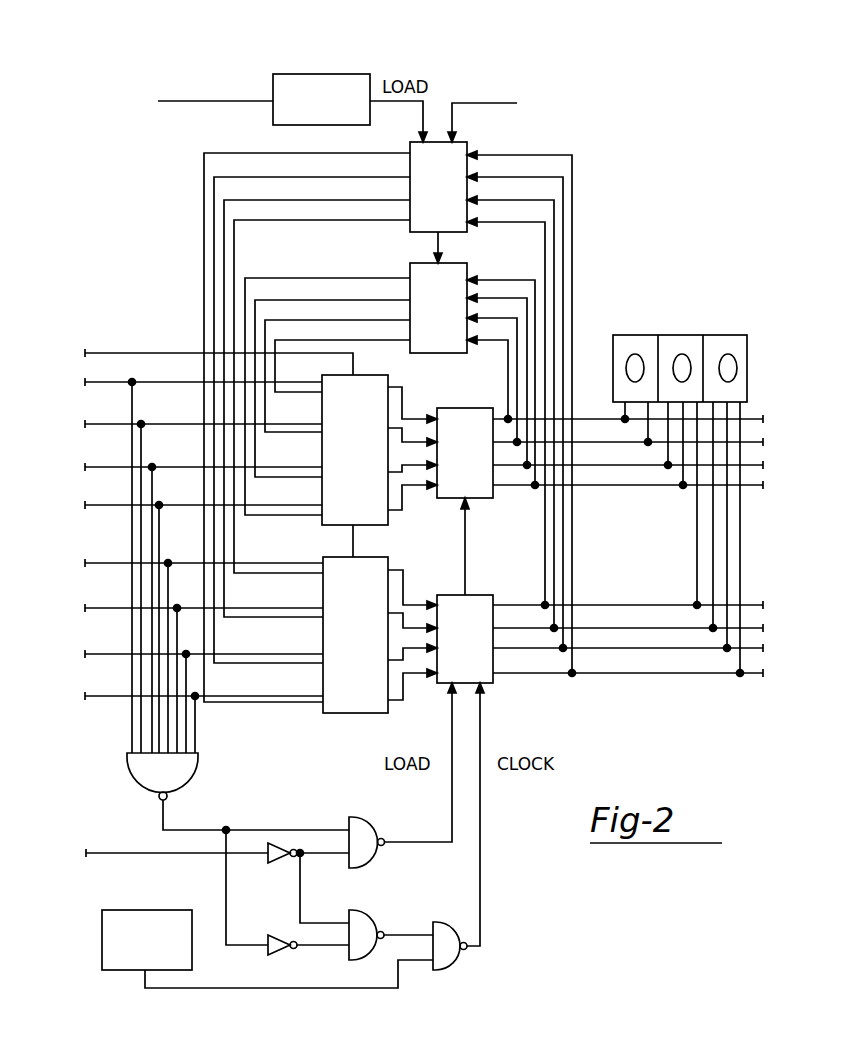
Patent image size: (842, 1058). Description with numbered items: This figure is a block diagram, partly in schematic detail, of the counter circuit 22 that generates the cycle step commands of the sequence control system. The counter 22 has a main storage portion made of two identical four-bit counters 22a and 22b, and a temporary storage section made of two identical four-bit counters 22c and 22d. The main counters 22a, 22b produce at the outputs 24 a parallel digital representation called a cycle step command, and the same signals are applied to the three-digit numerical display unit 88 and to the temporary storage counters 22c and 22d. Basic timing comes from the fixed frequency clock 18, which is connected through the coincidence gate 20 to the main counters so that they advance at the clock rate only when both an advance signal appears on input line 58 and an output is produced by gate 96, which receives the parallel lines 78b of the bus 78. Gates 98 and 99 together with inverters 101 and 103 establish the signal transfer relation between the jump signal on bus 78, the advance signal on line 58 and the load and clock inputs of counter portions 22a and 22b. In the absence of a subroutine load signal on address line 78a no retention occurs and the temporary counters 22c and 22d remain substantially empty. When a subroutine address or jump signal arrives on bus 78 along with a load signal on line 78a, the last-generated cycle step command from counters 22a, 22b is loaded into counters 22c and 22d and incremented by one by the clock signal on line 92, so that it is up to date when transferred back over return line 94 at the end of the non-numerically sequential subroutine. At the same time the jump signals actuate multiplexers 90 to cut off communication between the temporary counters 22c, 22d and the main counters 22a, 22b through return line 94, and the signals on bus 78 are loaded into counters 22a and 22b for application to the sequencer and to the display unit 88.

The address line 78a is at (232, 88).
The clock line 92 is at (517, 103).
The four-bit counter 22d is at (470, 147).
The four-bit counter 22c is at (410, 268).
The return line 94 is at (263, 176).
The bus 78 is at (302, 640).
The multiplexers 90 is at (353, 546).
The four-bit counter 22a is at (468, 392).
The four-bit counter 22b is at (492, 595).
The outputs 24 is at (766, 500).
The three-digit numerical display unit 88 is at (660, 335).
The counter 22 is at (641, 244).
The bus lines 78b is at (168, 335).
The gate 96 is at (198, 762).
The input line 58 is at (148, 838).
The inverter 101 is at (288, 842).
The inverter 103 is at (296, 922).
The gate 98 is at (373, 824).
The gate 99 is at (370, 917).
The coincidence gate 20 is at (452, 966).
The clock 18 is at (192, 953).